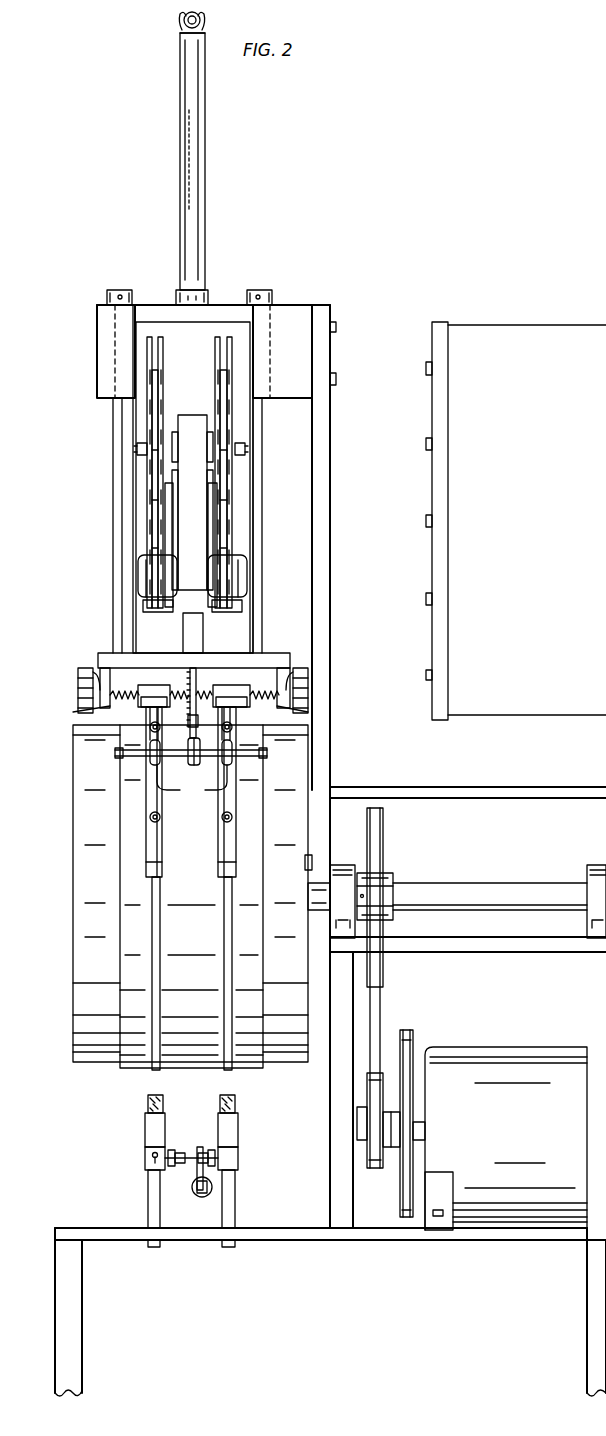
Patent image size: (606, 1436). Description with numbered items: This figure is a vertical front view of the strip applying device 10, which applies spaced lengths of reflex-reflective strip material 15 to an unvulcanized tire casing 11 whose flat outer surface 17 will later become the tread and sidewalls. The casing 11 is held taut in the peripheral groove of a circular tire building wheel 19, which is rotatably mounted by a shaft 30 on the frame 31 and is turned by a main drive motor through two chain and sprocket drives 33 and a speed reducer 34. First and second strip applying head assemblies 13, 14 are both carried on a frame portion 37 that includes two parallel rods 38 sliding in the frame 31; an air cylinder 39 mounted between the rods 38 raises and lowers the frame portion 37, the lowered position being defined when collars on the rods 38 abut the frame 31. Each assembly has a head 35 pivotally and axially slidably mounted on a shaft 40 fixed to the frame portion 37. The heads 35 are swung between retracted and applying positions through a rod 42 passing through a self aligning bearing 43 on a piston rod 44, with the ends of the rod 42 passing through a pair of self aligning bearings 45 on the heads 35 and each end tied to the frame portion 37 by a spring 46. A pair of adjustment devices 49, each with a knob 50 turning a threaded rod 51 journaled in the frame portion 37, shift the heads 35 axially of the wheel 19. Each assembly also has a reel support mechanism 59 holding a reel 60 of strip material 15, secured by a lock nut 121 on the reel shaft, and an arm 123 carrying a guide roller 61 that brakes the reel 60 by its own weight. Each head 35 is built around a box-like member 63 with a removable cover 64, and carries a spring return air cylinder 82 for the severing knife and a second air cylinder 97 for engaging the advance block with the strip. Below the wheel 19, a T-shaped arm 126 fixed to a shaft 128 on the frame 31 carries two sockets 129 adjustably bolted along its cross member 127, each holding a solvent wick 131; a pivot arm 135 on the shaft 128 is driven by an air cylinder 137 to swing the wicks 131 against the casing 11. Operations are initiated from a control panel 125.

The device 10 is at (338, 196).
The tire casing 11 is at (121, 1077).
The first strip applying head assembly 13 is at (137, 837).
The second strip applying head assembly 14 is at (246, 837).
The strip material 15 is at (225, 375).
The outer surface 17 is at (232, 1070).
The tire building wheel 19 is at (83, 962).
The shaft 30 is at (515, 892).
The frame 31 is at (313, 318).
The chain and sprocket drives 33 is at (406, 1030).
The speed reducer 34 is at (506, 1138).
The head 35 is at (218, 852).
The frame portion 37 is at (238, 662).
The parallel rods 38 is at (120, 488).
The air cylinder 39 is at (187, 148).
The shaft 40 is at (190, 705).
The rod 42 is at (250, 753).
The self aligning bearing 43 is at (196, 763).
The piston rod 44 is at (190, 682).
The self aligning bearings 45 is at (180, 790).
The spring 46 is at (73, 712).
The adjustment devices 49 is at (95, 656).
The knob 50 is at (78, 680).
The rod 51 is at (185, 703).
The reel support mechanism 59 is at (215, 425).
The reel 60 is at (220, 352).
The guide roller 61 is at (250, 583).
The box-like member 63 is at (158, 866).
The cover 64 is at (146, 860).
The air cylinder 82 is at (222, 819).
The second air cylinder 97 is at (150, 712).
The lock nut 121 is at (137, 448).
The arm 123 is at (212, 538).
The control panel 125 is at (519, 521).
The T-shaped arm 126 is at (190, 1152).
The cross member 127 is at (148, 1160).
The shaft 128 is at (200, 1147).
The socket 129 is at (145, 1130).
The wick 131 is at (222, 1097).
The pivot arm 135 is at (200, 1195).
The air cylinder 137 is at (222, 1191).